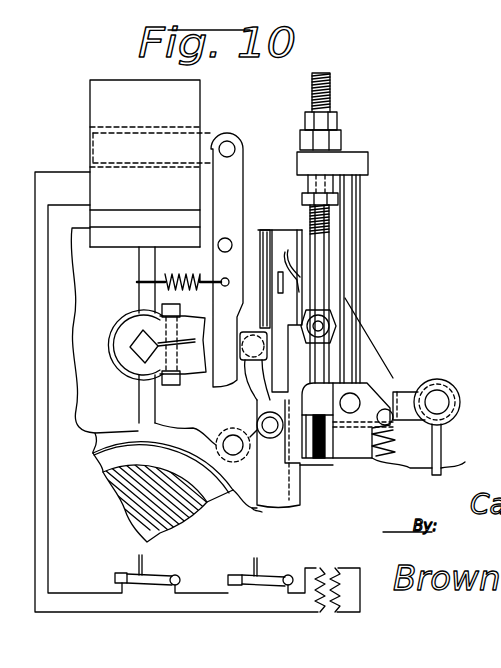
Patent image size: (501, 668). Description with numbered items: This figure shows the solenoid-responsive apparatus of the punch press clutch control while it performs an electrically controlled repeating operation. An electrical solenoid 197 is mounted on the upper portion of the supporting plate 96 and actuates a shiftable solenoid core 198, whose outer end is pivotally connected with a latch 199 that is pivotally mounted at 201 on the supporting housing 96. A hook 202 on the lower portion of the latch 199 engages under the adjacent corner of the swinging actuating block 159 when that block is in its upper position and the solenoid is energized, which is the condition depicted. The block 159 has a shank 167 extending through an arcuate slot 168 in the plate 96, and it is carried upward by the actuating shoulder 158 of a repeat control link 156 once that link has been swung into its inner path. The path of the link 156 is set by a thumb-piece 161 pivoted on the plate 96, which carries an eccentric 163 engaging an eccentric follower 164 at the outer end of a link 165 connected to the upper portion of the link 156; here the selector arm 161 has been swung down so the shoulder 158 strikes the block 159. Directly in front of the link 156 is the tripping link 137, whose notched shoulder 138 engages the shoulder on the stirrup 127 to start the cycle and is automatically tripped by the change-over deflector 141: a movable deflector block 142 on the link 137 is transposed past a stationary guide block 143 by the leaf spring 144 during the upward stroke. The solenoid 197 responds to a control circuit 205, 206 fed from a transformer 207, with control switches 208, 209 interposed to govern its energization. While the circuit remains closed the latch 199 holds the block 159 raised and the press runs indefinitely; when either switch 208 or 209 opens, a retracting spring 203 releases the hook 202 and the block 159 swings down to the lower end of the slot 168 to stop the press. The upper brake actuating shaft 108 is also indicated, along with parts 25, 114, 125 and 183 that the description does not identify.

The toothed sector 25 is at (109, 479).
The supporting plate 96 is at (92, 382).
The upper brake actuating shaft 108 is at (136, 341).
The threaded rod 114 is at (323, 235).
The guide rod 125 is at (354, 186).
The stirrup 127 is at (307, 396).
The tripping link 137 is at (291, 501).
The notched shoulder 138 is at (307, 467).
The automatic change-over deflector 141 is at (304, 283).
The movable deflector block 142 is at (344, 298).
The stationary guide block 143 is at (284, 235).
The leaf spring 144 is at (291, 261).
The repeat control link 156 is at (257, 507).
The actuating shoulder 158 is at (303, 393).
The actuating block 159 is at (248, 386).
The thumb-piece 161 is at (442, 448).
The eccentric 163 is at (443, 376).
The eccentric follower 164 is at (451, 402).
The link 165 is at (397, 390).
The shank portion 167 is at (240, 337).
The arcuate slot 168 is at (245, 397).
The spring 183 is at (367, 460).
The electrical solenoid 197 is at (192, 88).
The solenoid core 198 is at (207, 136).
The latch 199 is at (240, 178).
The latch pivot 201 is at (219, 249).
The hook 202 is at (232, 355).
The retracting spring 203 is at (163, 279).
The control circuit 205 is at (48, 491).
The control circuit 206 is at (35, 533).
The transformer 207 is at (328, 567).
The control switch 208 is at (154, 576).
The control switch 209 is at (268, 577).